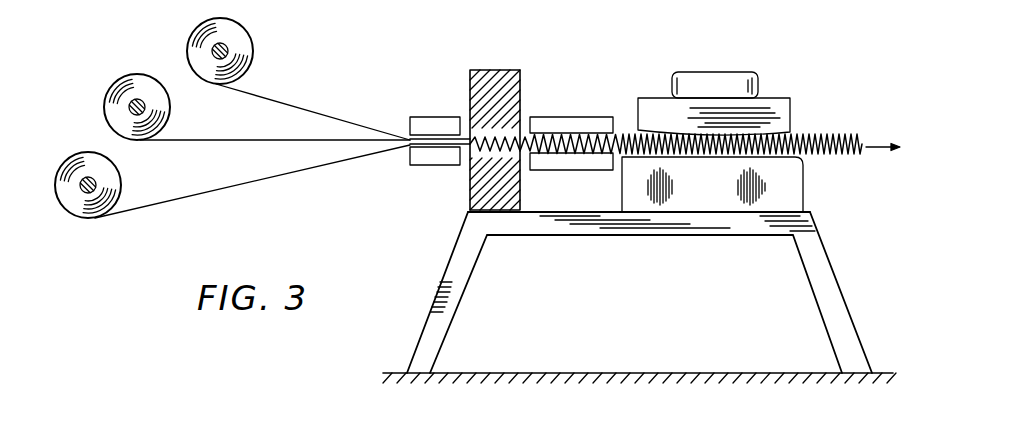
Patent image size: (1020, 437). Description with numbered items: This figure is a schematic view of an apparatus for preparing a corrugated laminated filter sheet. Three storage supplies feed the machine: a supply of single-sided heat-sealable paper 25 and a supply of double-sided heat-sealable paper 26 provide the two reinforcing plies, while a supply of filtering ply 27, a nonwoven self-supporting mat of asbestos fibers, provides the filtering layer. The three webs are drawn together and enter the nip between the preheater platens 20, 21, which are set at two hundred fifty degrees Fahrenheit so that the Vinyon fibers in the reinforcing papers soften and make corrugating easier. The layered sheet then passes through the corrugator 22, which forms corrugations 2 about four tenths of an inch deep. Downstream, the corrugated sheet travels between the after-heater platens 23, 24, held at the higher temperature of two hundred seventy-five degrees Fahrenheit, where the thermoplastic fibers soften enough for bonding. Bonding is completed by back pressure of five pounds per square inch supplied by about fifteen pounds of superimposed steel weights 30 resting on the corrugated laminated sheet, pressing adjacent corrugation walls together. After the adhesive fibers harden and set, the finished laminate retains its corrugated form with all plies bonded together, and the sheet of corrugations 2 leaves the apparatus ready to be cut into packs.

The corrugations 2 is at (858, 140).
The preheater platen 20 is at (435, 123).
The preheater platen 21 is at (425, 157).
The corrugator 22 is at (517, 92).
The after-heater platen 23 is at (582, 123).
The after-heater platen 24 is at (580, 158).
The storage supply of single-sided heat-sealable paper 25 is at (253, 57).
The storage supply of double-sided heat-sealable paper 26 is at (121, 184).
The storage supply of filtering ply 27 is at (170, 110).
The superimposed steel weights 30 is at (750, 83).